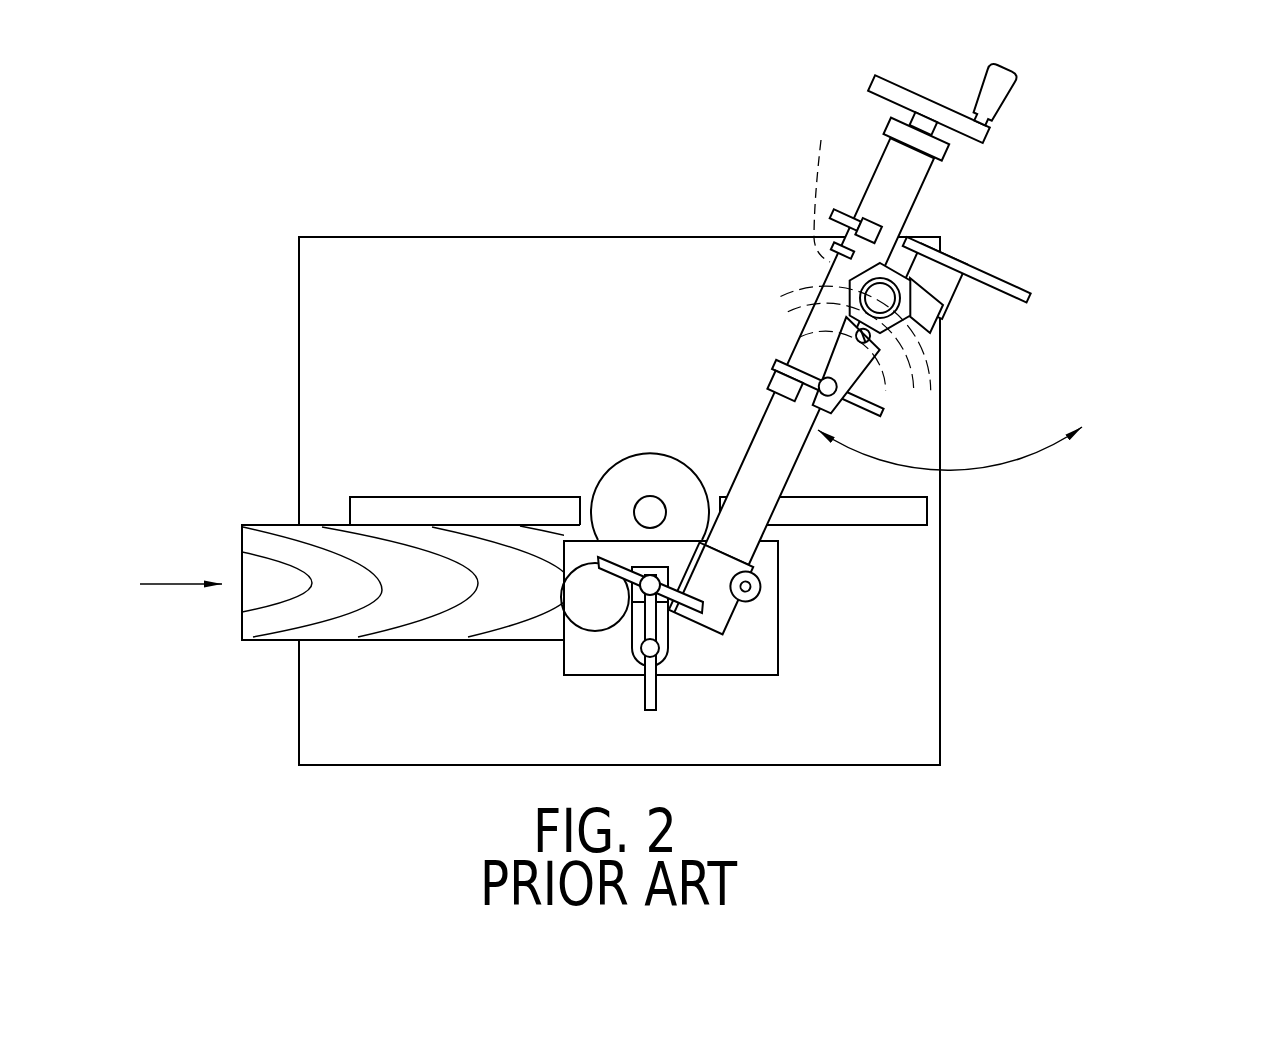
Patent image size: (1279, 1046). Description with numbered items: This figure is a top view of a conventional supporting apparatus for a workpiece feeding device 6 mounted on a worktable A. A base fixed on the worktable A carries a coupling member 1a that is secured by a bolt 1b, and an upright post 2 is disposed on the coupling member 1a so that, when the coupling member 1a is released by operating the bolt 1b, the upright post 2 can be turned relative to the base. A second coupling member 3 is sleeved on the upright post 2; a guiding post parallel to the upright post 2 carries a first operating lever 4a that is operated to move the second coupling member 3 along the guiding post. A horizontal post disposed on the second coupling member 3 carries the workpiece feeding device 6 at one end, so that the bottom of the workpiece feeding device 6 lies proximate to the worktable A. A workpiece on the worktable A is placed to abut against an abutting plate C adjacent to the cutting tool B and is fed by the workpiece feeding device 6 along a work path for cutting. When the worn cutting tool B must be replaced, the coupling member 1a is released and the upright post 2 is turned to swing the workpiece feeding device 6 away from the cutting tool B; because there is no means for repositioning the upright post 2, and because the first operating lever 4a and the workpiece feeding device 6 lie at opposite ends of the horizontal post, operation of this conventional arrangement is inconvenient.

The worktable A is at (578, 236).
The second coupling member 3 is at (812, 290).
The coupling member 1a is at (818, 182).
The bolt 1b is at (880, 243).
The upright post 2 is at (915, 301).
The first operating lever 4a is at (912, 364).
The cutting tool B is at (649, 490).
The abutting plate C is at (433, 496).
The workpiece feeding device 6 is at (733, 680).